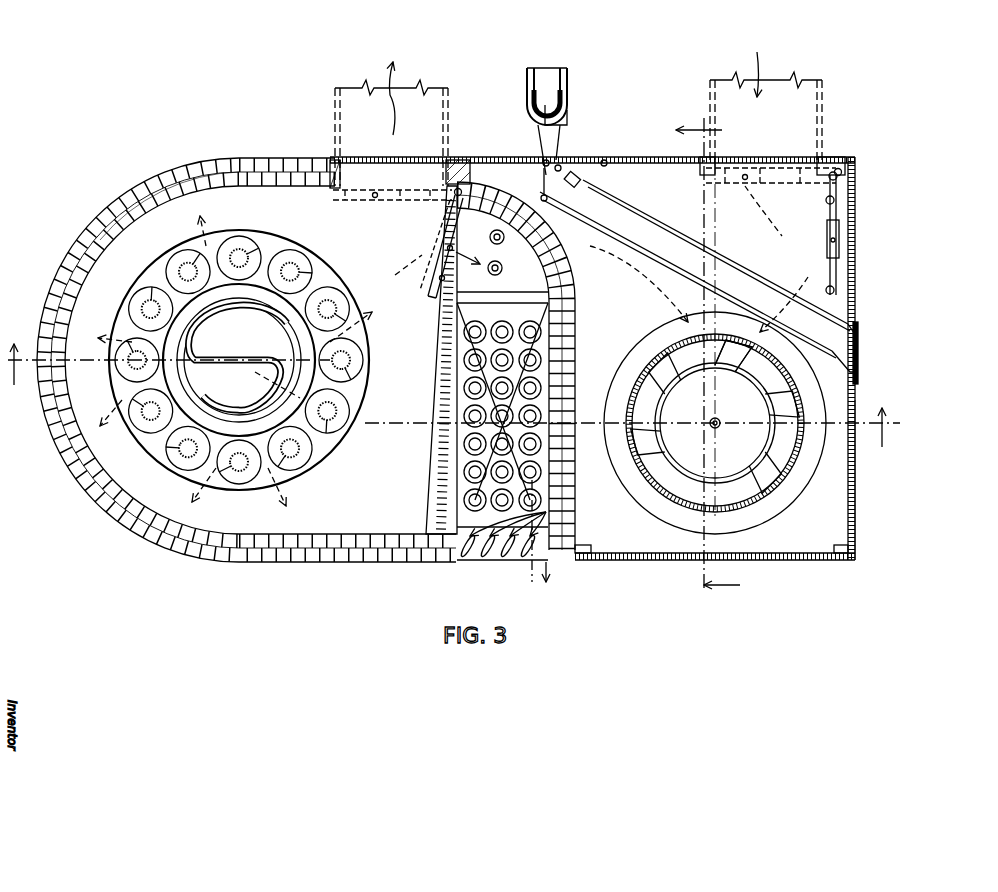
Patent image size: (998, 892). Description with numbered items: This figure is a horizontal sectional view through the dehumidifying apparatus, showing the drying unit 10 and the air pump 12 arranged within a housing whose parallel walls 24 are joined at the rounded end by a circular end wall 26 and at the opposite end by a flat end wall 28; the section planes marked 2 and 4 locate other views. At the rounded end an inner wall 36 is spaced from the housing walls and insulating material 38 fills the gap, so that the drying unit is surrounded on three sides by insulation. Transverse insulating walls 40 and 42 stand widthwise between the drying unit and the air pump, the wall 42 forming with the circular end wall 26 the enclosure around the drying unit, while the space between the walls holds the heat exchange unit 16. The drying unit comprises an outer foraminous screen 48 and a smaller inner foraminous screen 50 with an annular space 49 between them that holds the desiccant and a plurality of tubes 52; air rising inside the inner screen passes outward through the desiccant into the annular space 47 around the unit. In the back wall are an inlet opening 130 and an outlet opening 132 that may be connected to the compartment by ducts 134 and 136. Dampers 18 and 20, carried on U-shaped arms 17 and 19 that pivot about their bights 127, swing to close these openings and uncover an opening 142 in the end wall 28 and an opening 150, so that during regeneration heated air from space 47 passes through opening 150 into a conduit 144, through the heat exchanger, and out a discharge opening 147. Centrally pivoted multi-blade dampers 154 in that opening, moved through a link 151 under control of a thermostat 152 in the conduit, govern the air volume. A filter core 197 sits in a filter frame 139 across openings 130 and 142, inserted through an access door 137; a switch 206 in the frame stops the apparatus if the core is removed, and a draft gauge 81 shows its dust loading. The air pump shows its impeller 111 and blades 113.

The section line 2- 2 is at (716, 358).
The section line 4- 4 is at (451, 406).
The drying unit 10 is at (215, 348).
The air pump 12 is at (632, 498).
The heat exchange unit 16 is at (530, 370).
The U-shaped arm 17 is at (440, 228).
The damper 18 is at (432, 253).
The U-shaped arm 19 is at (830, 208).
The damper 20 is at (828, 234).
The parallel walls 24 is at (605, 157).
The circular end wall 26 is at (142, 188).
The flat end wall 28 is at (856, 522).
The inner wall 36 is at (128, 214).
The insulating material 38 is at (340, 562).
The transverse insulating wall 40 is at (578, 324).
The transverse insulating wall 42 is at (445, 374).
The annular space 47 is at (418, 344).
The outer foraminous screen 48 is at (233, 491).
The annular space 49 is at (355, 388).
The inner foraminous screen 50 is at (122, 392).
The tubes 52 is at (239, 256).
The draft gauge 81 is at (568, 80).
The impeller 111 is at (755, 484).
The impeller blade 113 is at (787, 478).
The bights 127 is at (459, 189).
The inlet opening 130 is at (752, 165).
The outlet opening 132 is at (440, 188).
The duct 134 is at (824, 92).
The duct 136 is at (452, 90).
The access door 137 is at (858, 350).
The filter frame 139 is at (731, 300).
The opening 142 is at (852, 243).
The conduit 144 is at (538, 297).
The discharge opening 147 is at (509, 548).
The opening 150 is at (452, 254).
The link 151 is at (505, 240).
The thermostat 152 is at (503, 269).
The multi-blade dampers 154 is at (546, 512).
The filter core 197 is at (637, 232).
The switch 206 is at (580, 178).